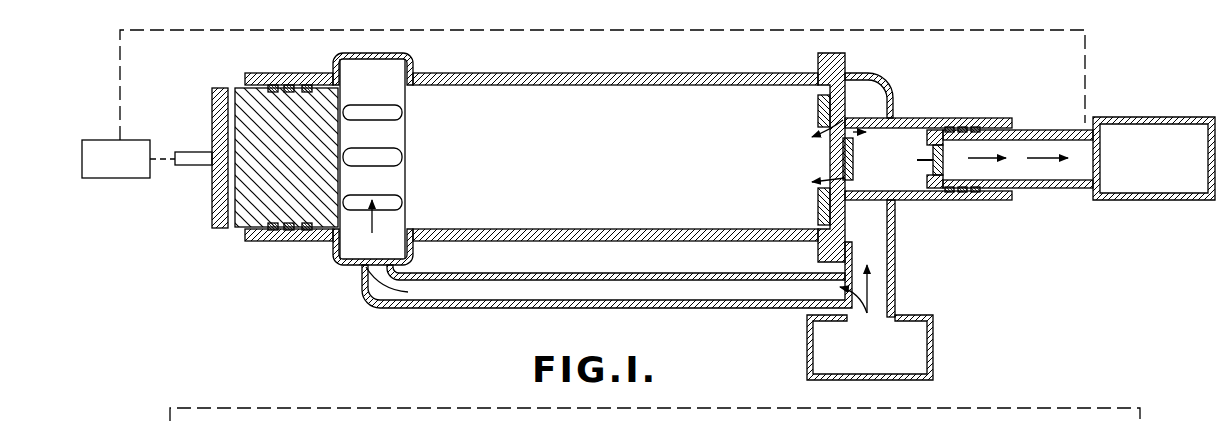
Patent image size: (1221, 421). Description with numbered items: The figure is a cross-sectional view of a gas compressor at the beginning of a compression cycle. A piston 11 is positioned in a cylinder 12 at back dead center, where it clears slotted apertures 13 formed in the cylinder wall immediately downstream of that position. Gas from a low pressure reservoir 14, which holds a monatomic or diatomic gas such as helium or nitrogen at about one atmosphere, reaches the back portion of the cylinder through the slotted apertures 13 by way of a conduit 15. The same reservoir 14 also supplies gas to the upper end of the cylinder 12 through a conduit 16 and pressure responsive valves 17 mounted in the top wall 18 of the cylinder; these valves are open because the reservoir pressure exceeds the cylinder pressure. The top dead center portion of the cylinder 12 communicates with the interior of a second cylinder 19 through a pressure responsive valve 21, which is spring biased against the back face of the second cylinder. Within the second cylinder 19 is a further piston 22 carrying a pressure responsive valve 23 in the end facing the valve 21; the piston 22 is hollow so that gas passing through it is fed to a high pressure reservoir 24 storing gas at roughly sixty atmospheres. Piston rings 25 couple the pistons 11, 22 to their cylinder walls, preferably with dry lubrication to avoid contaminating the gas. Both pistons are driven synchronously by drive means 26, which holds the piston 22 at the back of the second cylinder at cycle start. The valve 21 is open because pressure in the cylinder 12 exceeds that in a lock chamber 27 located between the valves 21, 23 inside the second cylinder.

The piston 11 is at (262, 242).
The cylinder 12 is at (605, 85).
The slotted apertures 13 is at (405, 109).
The low pressure reservoir 14 is at (920, 348).
The conduit 15 is at (607, 295).
The conduit 16 is at (877, 232).
The pressure responsive valves 17 is at (818, 106).
The top wall 18 is at (845, 62).
The second cylinder 19 is at (936, 128).
The pressure responsive valve 21 is at (855, 160).
The piston 22 is at (1000, 130).
The pressure responsive valve 23 is at (945, 160).
The high pressure reservoir 24 is at (1178, 124).
The piston rings 25 is at (291, 85).
The drive means 26 is at (135, 178).
The lock chamber 27 is at (896, 120).